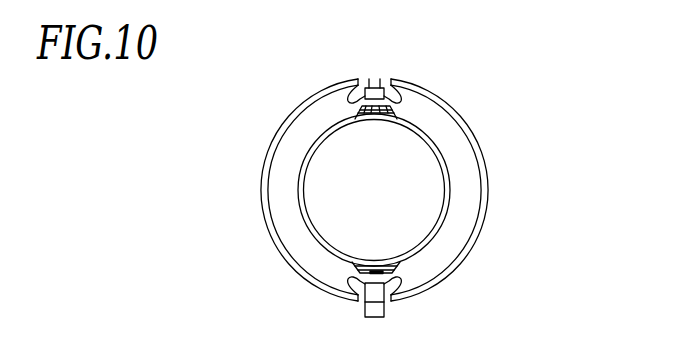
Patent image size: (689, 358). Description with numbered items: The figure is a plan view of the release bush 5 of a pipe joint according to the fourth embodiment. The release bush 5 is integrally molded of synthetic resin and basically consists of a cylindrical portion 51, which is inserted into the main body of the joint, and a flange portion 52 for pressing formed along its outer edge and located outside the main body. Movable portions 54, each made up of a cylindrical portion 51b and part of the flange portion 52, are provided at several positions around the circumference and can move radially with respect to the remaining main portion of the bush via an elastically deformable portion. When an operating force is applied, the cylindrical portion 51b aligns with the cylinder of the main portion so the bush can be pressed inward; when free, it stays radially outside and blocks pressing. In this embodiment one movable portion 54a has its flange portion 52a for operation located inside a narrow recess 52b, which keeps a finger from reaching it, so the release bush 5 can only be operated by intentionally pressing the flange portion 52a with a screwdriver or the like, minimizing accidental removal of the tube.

The release bush 5 is at (482, 120).
The cylindrical portion 51 is at (433, 153).
The cylindrical portion of the movable portion 51b is at (376, 119).
The flange portion 52 is at (476, 176).
The flange portion for operation 52a is at (380, 80).
The narrow recess 52b is at (368, 79).
The movable portion 54 is at (365, 322).
The movable portion with recessed flange 54a is at (373, 73).